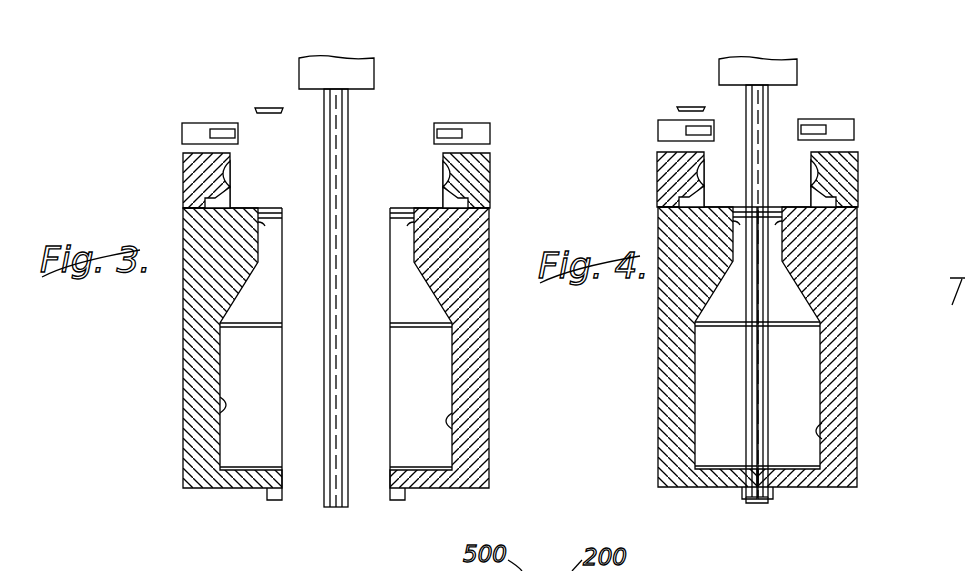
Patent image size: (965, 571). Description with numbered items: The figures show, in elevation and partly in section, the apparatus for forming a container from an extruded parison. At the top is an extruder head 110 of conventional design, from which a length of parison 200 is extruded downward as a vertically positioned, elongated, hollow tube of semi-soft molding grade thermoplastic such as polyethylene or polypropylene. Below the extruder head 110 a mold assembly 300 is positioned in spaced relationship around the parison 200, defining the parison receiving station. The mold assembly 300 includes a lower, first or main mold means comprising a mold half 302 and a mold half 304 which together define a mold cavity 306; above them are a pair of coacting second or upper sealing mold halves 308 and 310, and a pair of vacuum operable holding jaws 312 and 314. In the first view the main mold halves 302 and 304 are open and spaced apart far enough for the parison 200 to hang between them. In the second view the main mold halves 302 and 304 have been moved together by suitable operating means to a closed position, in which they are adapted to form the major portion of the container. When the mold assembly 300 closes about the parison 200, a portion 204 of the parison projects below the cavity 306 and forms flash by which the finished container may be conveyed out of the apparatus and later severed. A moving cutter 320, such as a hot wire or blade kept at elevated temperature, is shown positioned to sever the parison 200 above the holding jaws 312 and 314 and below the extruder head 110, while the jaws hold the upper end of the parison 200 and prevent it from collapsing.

In FIG. 3, the extruder head 110 is at (365, 71).
In FIG. 4, the extruder head 110 is at (786, 72).
In FIG. 3, the parison 200 is at (340, 110).
In FIG. 4, the parison 200 is at (757, 102).
In FIG. 4, the portion of the extruded parison 204 is at (758, 506).
In FIG. 3, the mold assembly 300 is at (505, 377).
In FIG. 4, the mold assembly 300 is at (880, 384).
In FIG. 3, the mold half 302 is at (224, 493).
In FIG. 4, the mold half 302 is at (702, 492).
In FIG. 3, the mold half 304 is at (427, 492).
In FIG. 4, the mold half 304 is at (813, 492).
In FIG. 3, the mold cavity 306 is at (222, 405).
In FIG. 4, the mold cavity 306 is at (818, 431).
In FIG. 3, the upper sealing mold half 308 is at (182, 178).
In FIG. 4, the upper sealing mold half 308 is at (656, 187).
In FIG. 3, the upper sealing mold half 310 is at (493, 180).
In FIG. 4, the upper sealing mold half 310 is at (861, 182).
In FIG. 3, the holding jaw 312 is at (181, 132).
In FIG. 4, the holding jaw 312 is at (656, 130).
In FIG. 3, the holding jaw 314 is at (493, 131).
In FIG. 4, the holding jaw 314 is at (856, 127).
In FIG. 3, the cutter 320 is at (257, 104).
In FIG. 4, the cutter 320 is at (688, 104).